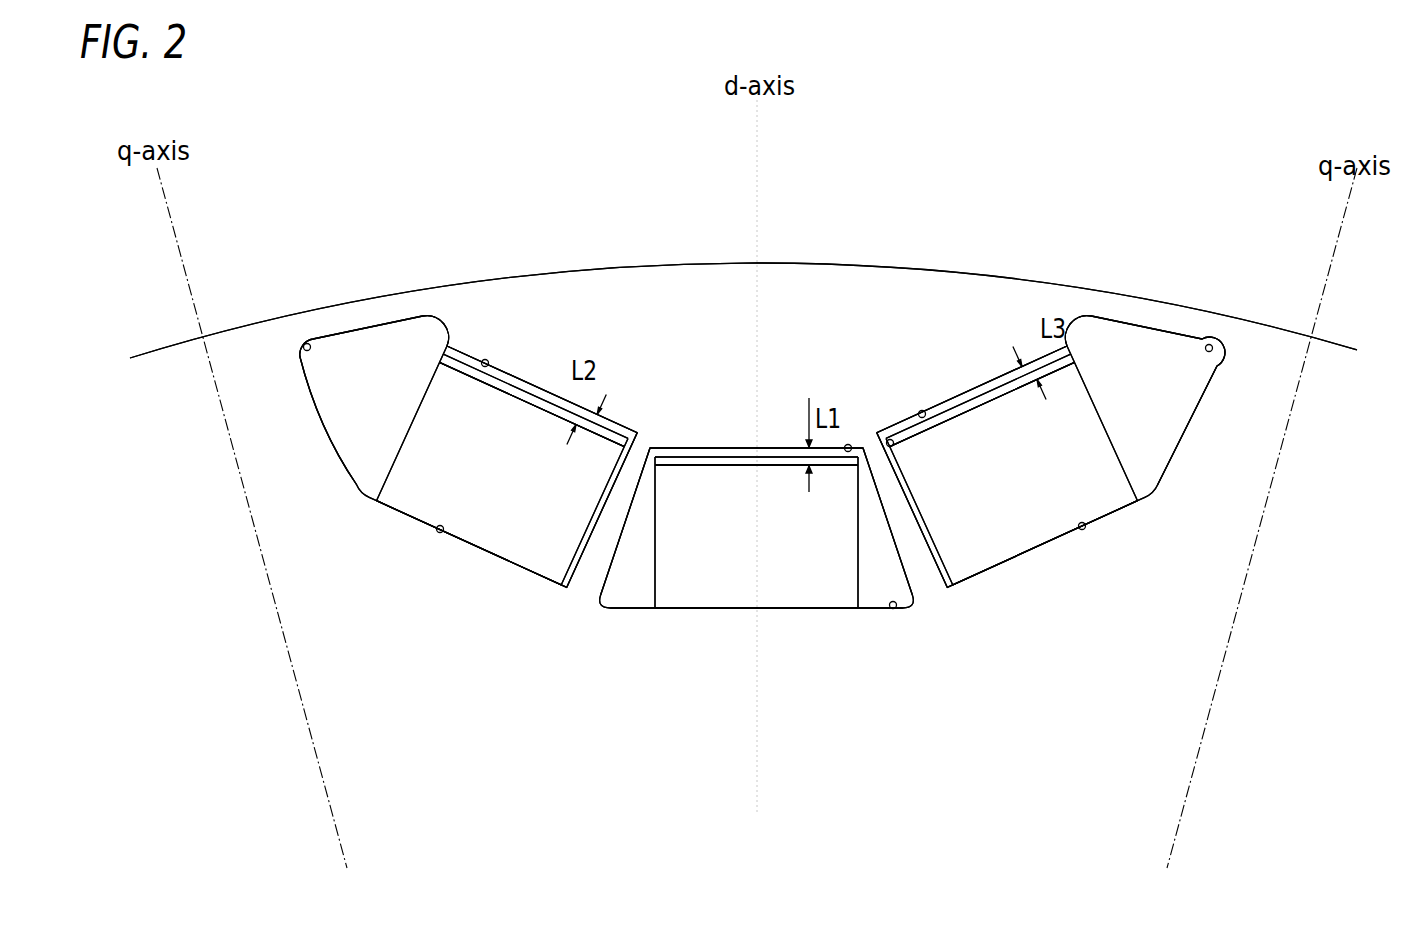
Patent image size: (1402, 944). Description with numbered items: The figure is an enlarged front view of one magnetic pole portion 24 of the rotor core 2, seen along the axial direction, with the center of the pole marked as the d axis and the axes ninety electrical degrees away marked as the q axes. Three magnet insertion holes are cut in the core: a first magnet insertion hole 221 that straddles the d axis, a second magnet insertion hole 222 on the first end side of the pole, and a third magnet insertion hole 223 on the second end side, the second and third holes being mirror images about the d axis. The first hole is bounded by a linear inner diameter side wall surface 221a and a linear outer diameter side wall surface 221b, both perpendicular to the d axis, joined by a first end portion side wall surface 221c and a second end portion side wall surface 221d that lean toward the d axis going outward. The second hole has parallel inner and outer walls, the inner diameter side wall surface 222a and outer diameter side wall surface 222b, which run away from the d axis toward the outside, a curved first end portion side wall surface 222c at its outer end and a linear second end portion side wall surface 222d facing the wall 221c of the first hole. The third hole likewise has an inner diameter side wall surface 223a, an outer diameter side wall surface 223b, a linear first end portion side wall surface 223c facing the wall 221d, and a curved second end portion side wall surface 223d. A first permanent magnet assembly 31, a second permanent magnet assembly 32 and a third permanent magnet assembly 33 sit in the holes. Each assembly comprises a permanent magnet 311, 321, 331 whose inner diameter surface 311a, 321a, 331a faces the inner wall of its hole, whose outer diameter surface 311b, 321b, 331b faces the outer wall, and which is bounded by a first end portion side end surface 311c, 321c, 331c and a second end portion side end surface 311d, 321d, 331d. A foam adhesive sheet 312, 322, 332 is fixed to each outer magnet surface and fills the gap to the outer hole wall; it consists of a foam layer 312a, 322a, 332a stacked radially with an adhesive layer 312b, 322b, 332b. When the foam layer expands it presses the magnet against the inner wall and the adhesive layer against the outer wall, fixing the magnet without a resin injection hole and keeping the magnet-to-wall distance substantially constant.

The rotor core 2 is at (165, 347).
The magnetic pole portion 24 is at (627, 268).
The first permanent magnet assembly 31 is at (777, 590).
The second permanent magnet assembly 32 is at (408, 500).
The third permanent magnet assembly 33 is at (1117, 500).
The first magnet insertion hole 221 is at (625, 612).
The inner diameter side wall surface 221a is at (893, 609).
The outer diameter side wall surface 221b is at (848, 444).
The first end portion side wall surface 221c is at (612, 600).
The second end portion side wall surface 221d is at (907, 577).
The second magnet insertion hole 222 is at (362, 342).
The inner diameter side wall surface 222a is at (440, 533).
The outer diameter side wall surface 222b is at (488, 360).
The first end portion side wall surface 222c is at (304, 346).
The second end portion side wall surface 222d is at (626, 457).
The third magnet insertion hole 223 is at (1150, 340).
The inner diameter side wall surface 223a is at (1084, 530).
The outer diameter side wall surface 223b is at (921, 410).
The first end portion side wall surface 223c is at (888, 440).
The second end portion side wall surface 223d is at (1209, 344).
The permanent magnet 311 is at (803, 583).
The inner diameter surface 311a is at (706, 606).
The outer diameter surface 311b is at (712, 463).
The first end portion side end surface 311c is at (652, 572).
The second end portion side end surface 311d is at (861, 572).
The foam adhesive sheet 312 is at (852, 322).
The foam layer 312a is at (776, 449).
The adhesive layer 312b is at (781, 457).
The permanent magnet 321 is at (515, 552).
The inner diameter surface 321a is at (412, 523).
The outer diameter surface 321b is at (462, 370).
The first end portion side end surface 321c is at (404, 428).
The second end portion side end surface 321d is at (588, 551).
The foam adhesive sheet 322 is at (641, 292).
The foam layer 322a is at (548, 393).
The adhesive layer 322b is at (556, 406).
The permanent magnet 331 is at (1000, 557).
The inner diameter surface 331a is at (1052, 543).
The outer diameter surface 331b is at (1003, 392).
The first end portion side end surface 331c is at (942, 580).
The second end portion side end surface 331d is at (1106, 423).
The foam adhesive sheet 332 is at (897, 280).
The foam layer 332a is at (967, 393).
The adhesive layer 332b is at (975, 405).